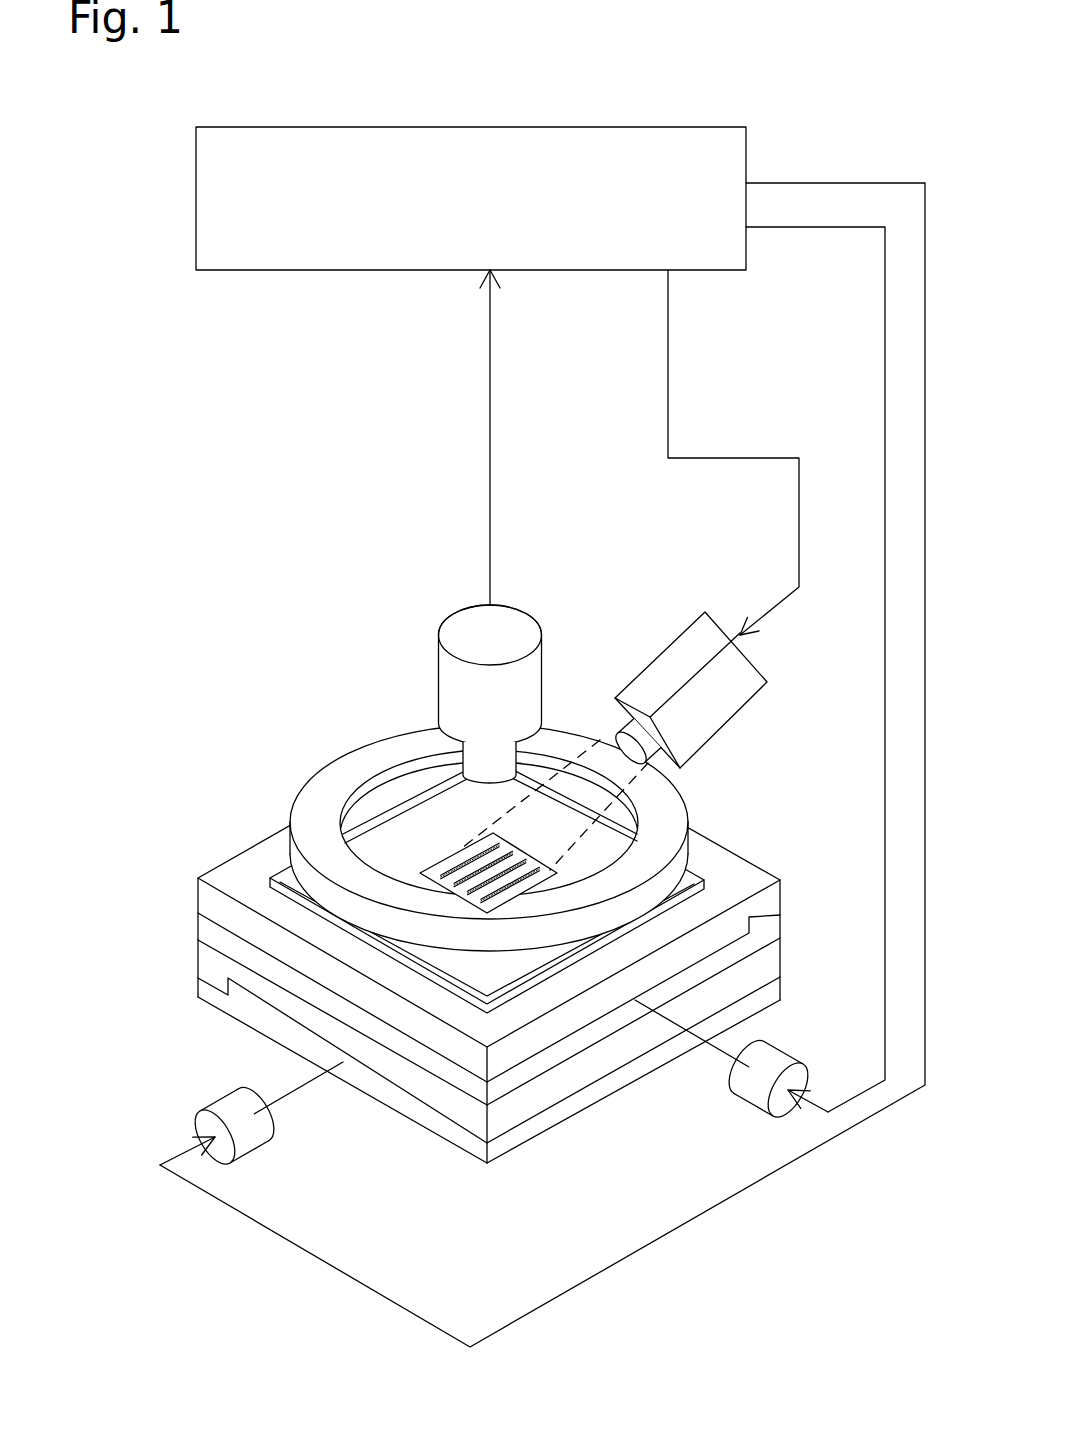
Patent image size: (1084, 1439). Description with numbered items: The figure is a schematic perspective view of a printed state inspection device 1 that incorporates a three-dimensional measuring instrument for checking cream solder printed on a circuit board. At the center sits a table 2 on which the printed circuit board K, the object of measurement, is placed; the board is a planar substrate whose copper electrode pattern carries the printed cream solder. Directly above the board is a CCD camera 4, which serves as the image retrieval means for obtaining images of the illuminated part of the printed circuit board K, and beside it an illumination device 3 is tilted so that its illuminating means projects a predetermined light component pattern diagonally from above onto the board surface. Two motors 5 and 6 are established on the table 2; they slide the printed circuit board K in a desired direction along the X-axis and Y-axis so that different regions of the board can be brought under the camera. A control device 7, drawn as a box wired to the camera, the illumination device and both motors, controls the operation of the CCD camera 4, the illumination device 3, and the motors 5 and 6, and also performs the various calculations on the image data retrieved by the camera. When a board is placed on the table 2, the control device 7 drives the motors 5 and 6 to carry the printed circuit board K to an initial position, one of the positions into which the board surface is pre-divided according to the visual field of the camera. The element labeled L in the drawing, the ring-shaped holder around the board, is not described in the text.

The printed state inspection device 1 is at (785, 1212).
The table 2 is at (222, 858).
The illumination device 3 is at (662, 652).
The CCD camera 4 is at (438, 683).
The motor 5 is at (215, 1101).
The motor 6 is at (743, 1099).
The control device 7 is at (243, 272).
The printed circuit board K is at (417, 827).
The wafer ring holder L is at (297, 795).